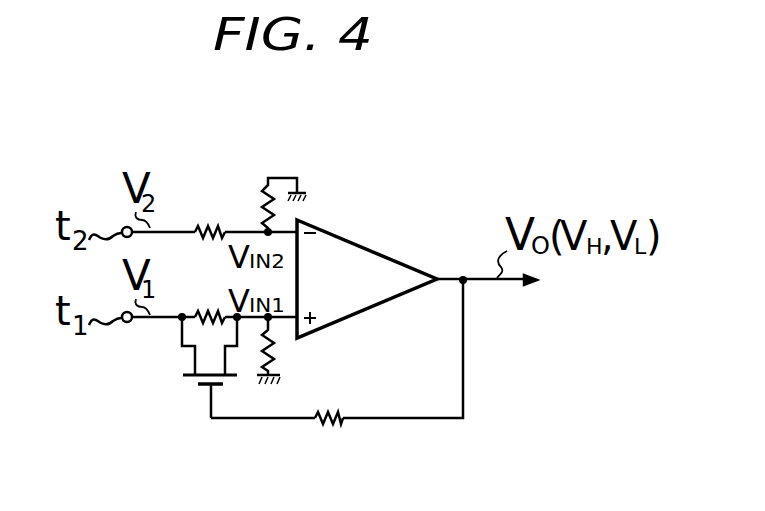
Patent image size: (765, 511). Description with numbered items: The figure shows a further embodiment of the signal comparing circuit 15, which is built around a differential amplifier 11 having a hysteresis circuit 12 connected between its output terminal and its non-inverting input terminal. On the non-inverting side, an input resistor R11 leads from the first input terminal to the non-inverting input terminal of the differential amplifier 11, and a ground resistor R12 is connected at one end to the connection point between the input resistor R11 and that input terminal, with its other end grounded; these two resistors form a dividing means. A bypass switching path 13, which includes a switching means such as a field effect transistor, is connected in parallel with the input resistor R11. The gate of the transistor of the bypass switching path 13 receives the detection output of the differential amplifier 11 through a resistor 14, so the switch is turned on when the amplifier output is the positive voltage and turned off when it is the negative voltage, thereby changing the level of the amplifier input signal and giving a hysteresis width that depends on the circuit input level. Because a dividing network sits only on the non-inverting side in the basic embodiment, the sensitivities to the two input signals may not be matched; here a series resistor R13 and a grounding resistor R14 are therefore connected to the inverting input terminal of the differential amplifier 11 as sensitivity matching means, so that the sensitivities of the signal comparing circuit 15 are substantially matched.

The differential amplifier 11 is at (400, 262).
The hysteresis circuit 12 is at (374, 378).
The bypass switching path 13 is at (186, 378).
The resistor 14 is at (323, 421).
The signal comparing circuit 15 is at (410, 163).
The input resistor R11 is at (198, 315).
The ground resistor R12 is at (272, 354).
The series resistor R13 is at (198, 228).
The grounding resistor R14 is at (263, 216).